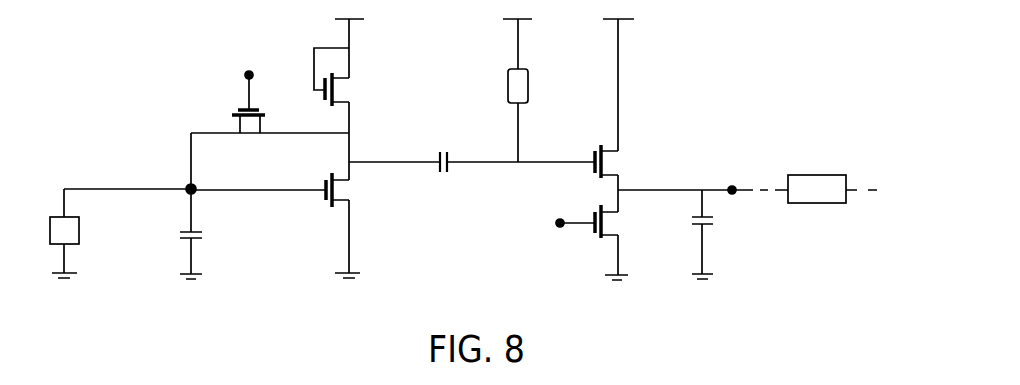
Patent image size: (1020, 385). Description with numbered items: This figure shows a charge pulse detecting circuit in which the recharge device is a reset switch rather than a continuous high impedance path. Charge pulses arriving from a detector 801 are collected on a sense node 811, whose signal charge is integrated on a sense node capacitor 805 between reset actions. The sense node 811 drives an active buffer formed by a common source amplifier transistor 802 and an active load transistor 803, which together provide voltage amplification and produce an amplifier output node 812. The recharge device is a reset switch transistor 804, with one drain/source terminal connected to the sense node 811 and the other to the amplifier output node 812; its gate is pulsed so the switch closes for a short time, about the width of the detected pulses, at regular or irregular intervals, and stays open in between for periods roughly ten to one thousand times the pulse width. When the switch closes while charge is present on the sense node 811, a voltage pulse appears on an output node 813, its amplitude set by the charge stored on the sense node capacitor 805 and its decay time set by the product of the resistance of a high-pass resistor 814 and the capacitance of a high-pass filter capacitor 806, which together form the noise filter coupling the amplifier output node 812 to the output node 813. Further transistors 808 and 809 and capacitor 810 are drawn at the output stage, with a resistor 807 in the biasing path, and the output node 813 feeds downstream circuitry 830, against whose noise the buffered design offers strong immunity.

The detector 801 is at (48, 233).
The common source amplifier transistor 802 is at (284, 205).
The active load transistor 803 is at (347, 76).
The reset switch transistor 804 is at (270, 111).
The sense node capacitor 805 is at (203, 234).
The high-pass filter capacitor 806 is at (461, 164).
The feedback resistor Rfb 807 is at (502, 90).
The output stage transistor 808 is at (620, 104).
The output stage bias transistor 809 is at (601, 235).
The output load capacitor CL 810 is at (713, 234).
The sense node 811 is at (127, 180).
The amplifier output node 812 is at (394, 151).
The output node 813 is at (685, 182).
The high-pass resistor 814 is at (521, 151).
The downstream circuitry 830 is at (818, 189).